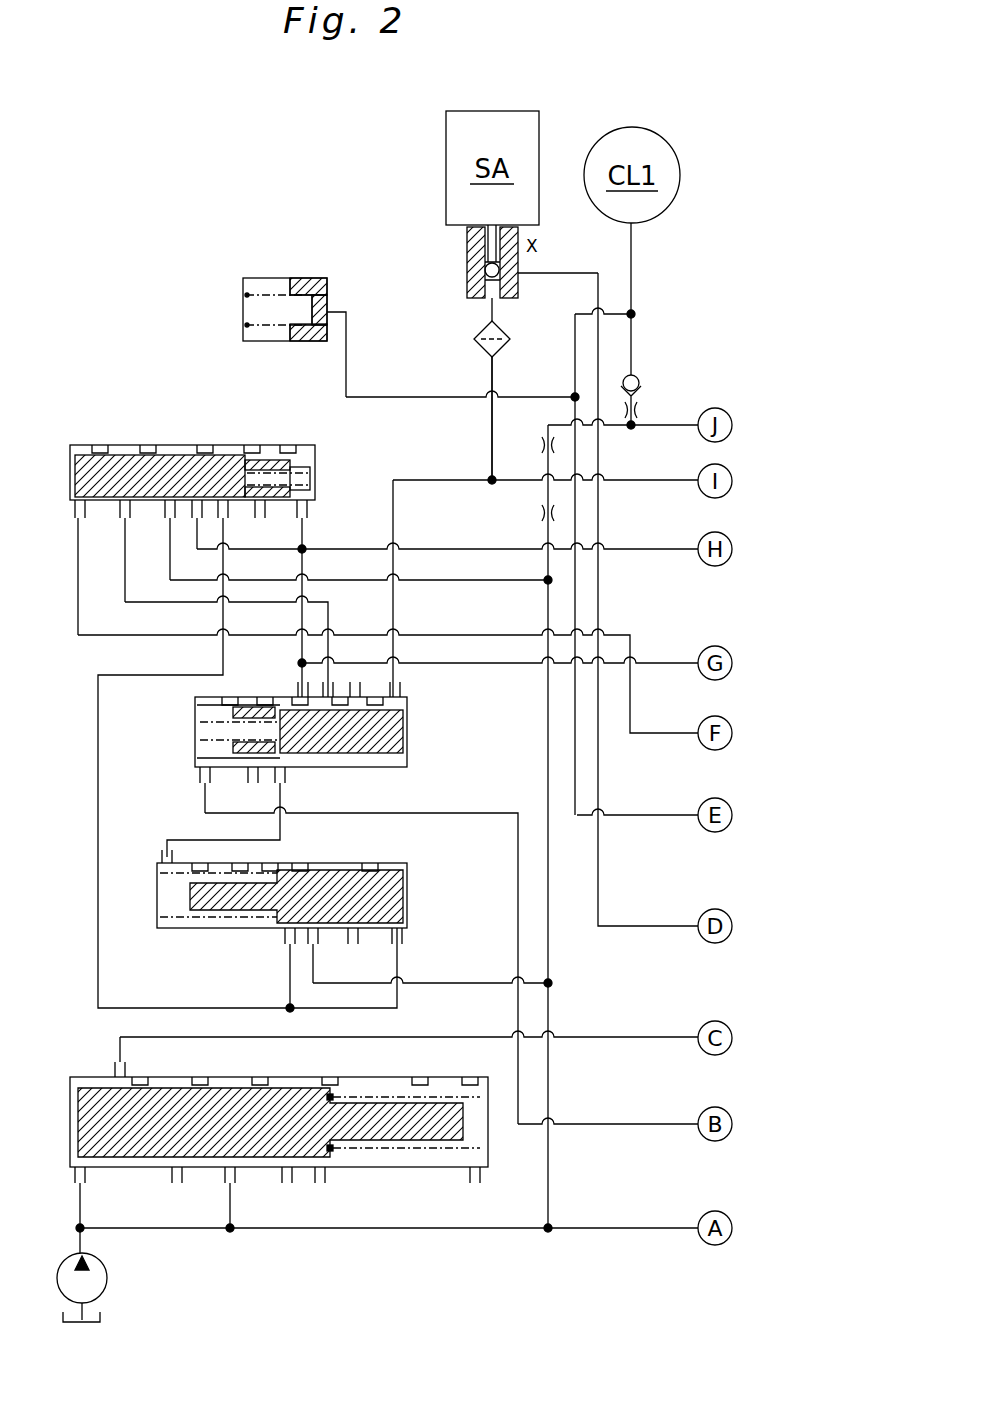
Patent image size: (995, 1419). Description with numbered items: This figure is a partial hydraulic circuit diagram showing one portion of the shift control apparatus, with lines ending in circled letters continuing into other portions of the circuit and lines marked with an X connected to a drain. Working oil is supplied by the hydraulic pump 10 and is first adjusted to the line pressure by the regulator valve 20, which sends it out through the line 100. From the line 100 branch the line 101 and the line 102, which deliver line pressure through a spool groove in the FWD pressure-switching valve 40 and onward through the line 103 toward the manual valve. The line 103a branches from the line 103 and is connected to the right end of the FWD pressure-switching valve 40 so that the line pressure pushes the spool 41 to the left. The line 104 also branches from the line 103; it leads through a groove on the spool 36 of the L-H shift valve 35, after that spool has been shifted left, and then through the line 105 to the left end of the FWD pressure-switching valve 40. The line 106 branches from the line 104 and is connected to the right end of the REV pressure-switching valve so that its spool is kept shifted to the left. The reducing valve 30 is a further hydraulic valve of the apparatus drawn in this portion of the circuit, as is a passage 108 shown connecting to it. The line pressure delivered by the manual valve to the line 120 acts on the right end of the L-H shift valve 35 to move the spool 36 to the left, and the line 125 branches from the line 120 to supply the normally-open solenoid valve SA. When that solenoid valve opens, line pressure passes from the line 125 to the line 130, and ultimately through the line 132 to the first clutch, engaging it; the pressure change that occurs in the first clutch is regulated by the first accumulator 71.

The hydraulic pump 10 is at (112, 1276).
The regulator valve 20 is at (98, 1070).
The reducing valve 30 is at (421, 881).
The L-H shift valve 35 is at (341, 736).
The spool 36 is at (405, 738).
The FWD pressure-switching valve 40 is at (227, 474).
The spool 41 is at (146, 466).
The first accumulator 71 is at (307, 279).
The line 100 is at (365, 1230).
The line 101 is at (550, 950).
The line 102 is at (420, 581).
The line 103 is at (433, 528).
The line 103a is at (304, 533).
The line 104 is at (300, 662).
The line 105 is at (130, 590).
The line 106 is at (425, 665).
The oil passage 108 is at (200, 838).
The line 120 is at (623, 481).
The line 125 is at (492, 437).
The line 130 is at (598, 600).
The line 132 is at (640, 813).